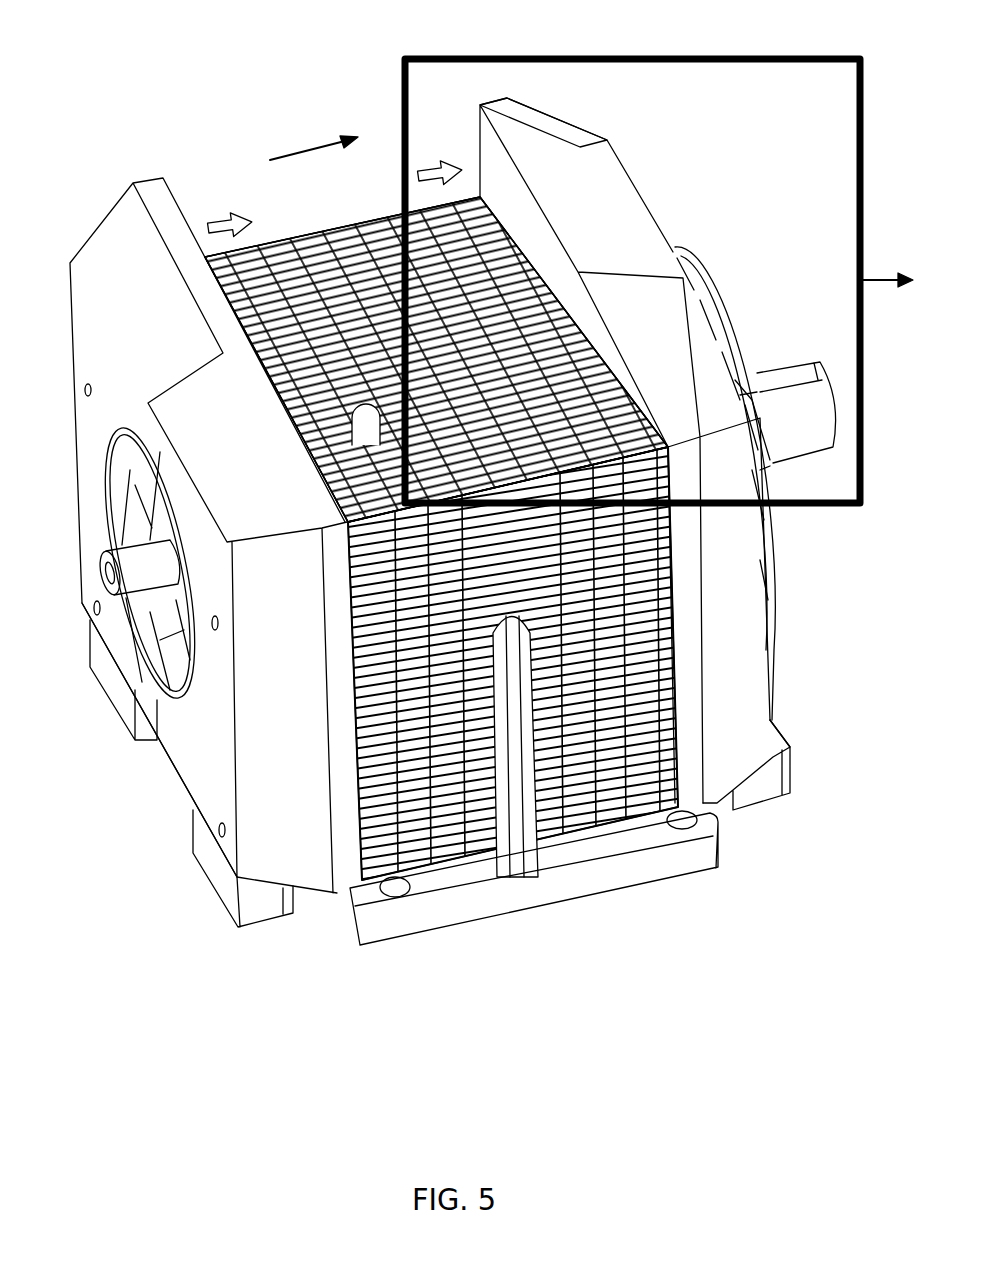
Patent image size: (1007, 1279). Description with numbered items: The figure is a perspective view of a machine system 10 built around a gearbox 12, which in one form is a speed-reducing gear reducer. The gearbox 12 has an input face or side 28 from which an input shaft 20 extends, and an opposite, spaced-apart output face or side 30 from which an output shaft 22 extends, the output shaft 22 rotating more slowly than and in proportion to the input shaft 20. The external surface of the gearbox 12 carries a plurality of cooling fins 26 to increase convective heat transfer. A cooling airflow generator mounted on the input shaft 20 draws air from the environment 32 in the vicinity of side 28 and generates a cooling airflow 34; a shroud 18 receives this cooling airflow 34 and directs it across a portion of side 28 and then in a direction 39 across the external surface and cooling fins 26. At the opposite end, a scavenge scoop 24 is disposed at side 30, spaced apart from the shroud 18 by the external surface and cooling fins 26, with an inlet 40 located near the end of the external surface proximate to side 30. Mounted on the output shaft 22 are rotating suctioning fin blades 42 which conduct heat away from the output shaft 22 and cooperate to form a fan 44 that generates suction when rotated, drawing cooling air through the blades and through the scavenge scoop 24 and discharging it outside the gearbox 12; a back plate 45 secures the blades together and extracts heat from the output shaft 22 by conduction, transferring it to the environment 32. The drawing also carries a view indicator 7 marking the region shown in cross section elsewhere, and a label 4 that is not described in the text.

The machine system 10 is at (730, 40).
The detail view indicator 7 is at (898, 281).
The gearbox 12 is at (358, 916).
The shroud 18 is at (176, 345).
The input shaft 20 is at (100, 590).
The output shaft 22 is at (822, 440).
The scavenge scoop 24 is at (712, 385).
The cooling fins 26 is at (322, 224).
The input face or side 28 is at (85, 798).
The output face or side 30 is at (884, 651).
The environment 32 is at (382, 95).
The cooling airflow 34 is at (217, 213).
The direction 39 is at (308, 150).
The inlet 40 is at (466, 125).
The rotating suctioning fin blades 42 is at (680, 244).
The fan 44 is at (748, 272).
The back plate 45 is at (735, 303).
The slot 4 is at (515, 728).